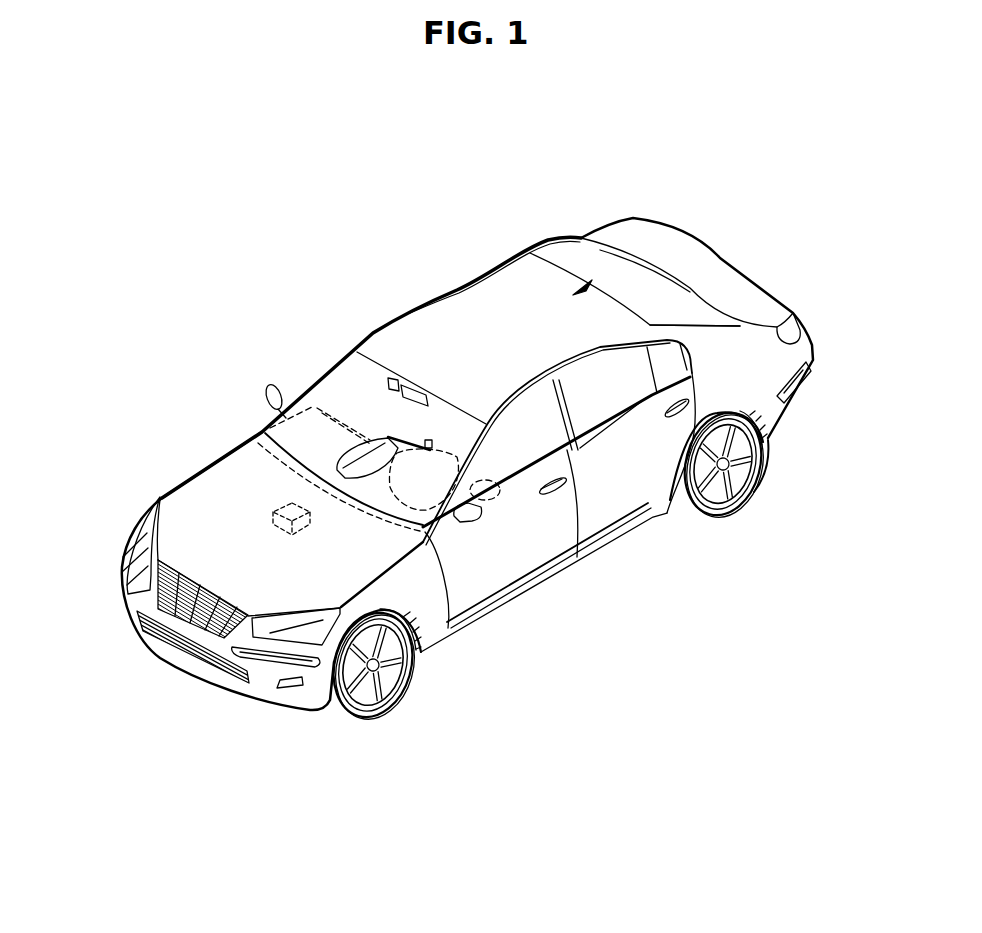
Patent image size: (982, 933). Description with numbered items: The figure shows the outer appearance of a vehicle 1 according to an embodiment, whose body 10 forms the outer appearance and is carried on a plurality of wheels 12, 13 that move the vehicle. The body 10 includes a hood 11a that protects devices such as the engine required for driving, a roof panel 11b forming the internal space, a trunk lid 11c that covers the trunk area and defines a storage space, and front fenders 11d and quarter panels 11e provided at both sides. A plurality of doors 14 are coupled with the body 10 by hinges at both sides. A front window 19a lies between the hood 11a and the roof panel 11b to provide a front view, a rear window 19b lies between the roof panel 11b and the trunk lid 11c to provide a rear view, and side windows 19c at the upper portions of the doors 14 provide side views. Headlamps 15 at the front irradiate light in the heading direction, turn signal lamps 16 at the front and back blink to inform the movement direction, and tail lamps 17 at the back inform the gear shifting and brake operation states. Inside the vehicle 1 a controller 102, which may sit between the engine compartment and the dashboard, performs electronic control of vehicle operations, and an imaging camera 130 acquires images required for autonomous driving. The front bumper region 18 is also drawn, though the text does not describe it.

The vehicle 1 is at (331, 208).
The body 10 is at (485, 245).
The hood 11a is at (200, 493).
The roof panel 11b is at (433, 313).
The trunk lid 11c is at (695, 253).
The front fenders 11d is at (423, 617).
The quarter panels 11e is at (768, 403).
The wheel 12 is at (395, 690).
The wheel 13 is at (742, 493).
The doors 14 is at (530, 547).
The headlamps 15 is at (143, 528).
The turn signal lamps 16 is at (134, 585).
The tail lamps 17 is at (797, 327).
The front bumper 18 is at (263, 693).
The front window 19a is at (353, 358).
The rear window 19b is at (557, 253).
The side windows 19c is at (600, 400).
The controller 102 is at (291, 507).
The imaging camera 130 is at (393, 377).